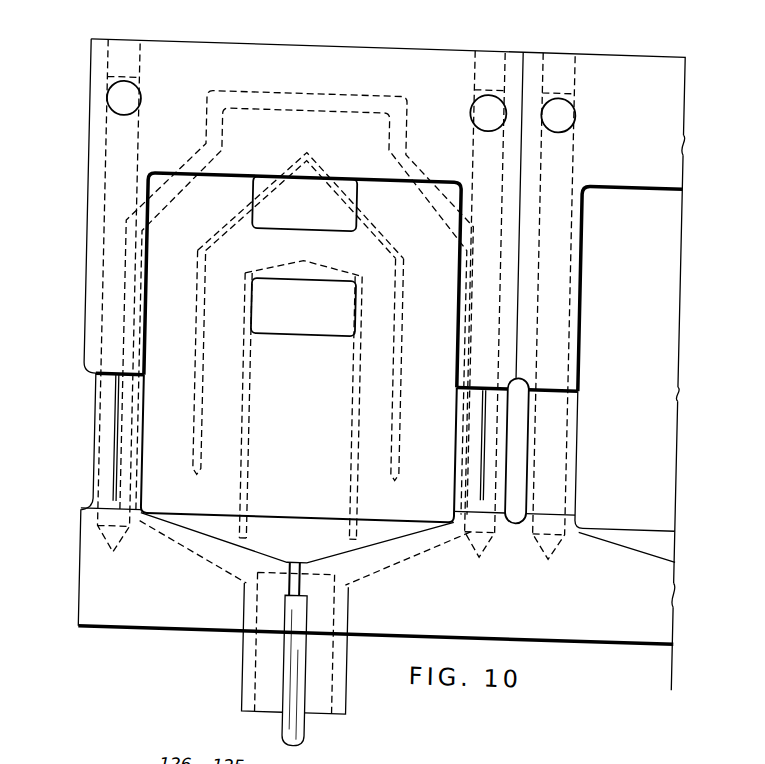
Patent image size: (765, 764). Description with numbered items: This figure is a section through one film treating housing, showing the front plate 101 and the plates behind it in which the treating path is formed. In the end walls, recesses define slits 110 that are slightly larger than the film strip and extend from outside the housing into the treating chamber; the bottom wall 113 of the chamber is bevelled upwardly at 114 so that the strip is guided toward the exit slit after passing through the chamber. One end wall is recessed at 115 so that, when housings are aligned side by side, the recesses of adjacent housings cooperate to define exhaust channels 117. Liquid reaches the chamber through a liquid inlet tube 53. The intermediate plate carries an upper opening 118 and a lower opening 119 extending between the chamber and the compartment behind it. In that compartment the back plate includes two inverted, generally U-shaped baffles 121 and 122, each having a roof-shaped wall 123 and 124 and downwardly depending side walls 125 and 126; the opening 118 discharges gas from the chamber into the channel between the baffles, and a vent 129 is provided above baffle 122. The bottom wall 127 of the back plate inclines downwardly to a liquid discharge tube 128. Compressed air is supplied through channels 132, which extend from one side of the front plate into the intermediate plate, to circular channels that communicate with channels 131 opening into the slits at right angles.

The front plate 101 is at (371, 50).
The channels 132 is at (122, 91).
The vent 129 is at (278, 113).
The roof-shaped wall 124 is at (334, 152).
The upper opening 118 is at (297, 200).
The lower opening 119 is at (300, 307).
The roof-shaped wall 123 is at (324, 255).
The baffle 122 is at (208, 364).
The side walls 126 is at (409, 378).
The side walls 125 is at (360, 410).
The baffle 121 is at (253, 441).
The channels 131 is at (125, 424).
The exhaust channels 117 is at (532, 436).
The recess 115 is at (103, 383).
The slits 110 is at (117, 421).
The bottom wall 127 is at (169, 507).
The bottom wall 113 is at (304, 547).
The bevel 114 is at (387, 531).
The liquid discharge tube 128 is at (257, 648).
The liquid inlet tube 53 is at (321, 731).